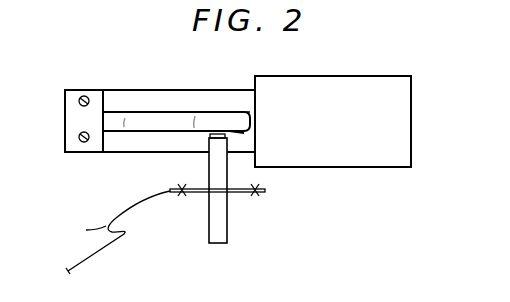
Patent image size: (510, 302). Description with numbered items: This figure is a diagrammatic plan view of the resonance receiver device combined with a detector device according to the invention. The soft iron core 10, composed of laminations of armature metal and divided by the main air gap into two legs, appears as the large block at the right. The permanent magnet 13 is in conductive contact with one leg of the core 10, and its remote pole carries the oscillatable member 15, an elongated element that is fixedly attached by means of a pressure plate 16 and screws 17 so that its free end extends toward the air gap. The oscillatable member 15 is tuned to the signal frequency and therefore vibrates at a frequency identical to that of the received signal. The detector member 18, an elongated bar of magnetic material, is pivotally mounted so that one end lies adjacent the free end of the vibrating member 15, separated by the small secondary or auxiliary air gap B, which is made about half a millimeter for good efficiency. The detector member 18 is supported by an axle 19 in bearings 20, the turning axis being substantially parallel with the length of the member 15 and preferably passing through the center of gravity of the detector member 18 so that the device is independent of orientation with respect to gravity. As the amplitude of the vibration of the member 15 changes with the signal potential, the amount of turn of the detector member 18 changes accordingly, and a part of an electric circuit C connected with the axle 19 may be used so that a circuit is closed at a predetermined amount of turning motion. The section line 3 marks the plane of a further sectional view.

The section line 3- 3 is at (213, 41).
The soft iron core 10 is at (404, 138).
The permanent magnet 13 is at (131, 150).
The oscillatable member 15 is at (133, 121).
The pressure plate 16 is at (68, 152).
The screws 17 is at (78, 103).
The detector member 18 is at (229, 237).
The axle 19 is at (239, 198).
The bearings 20 is at (259, 197).
The secondary or auxiliary air gap B is at (250, 133).
The electric circuit part C is at (118, 232).